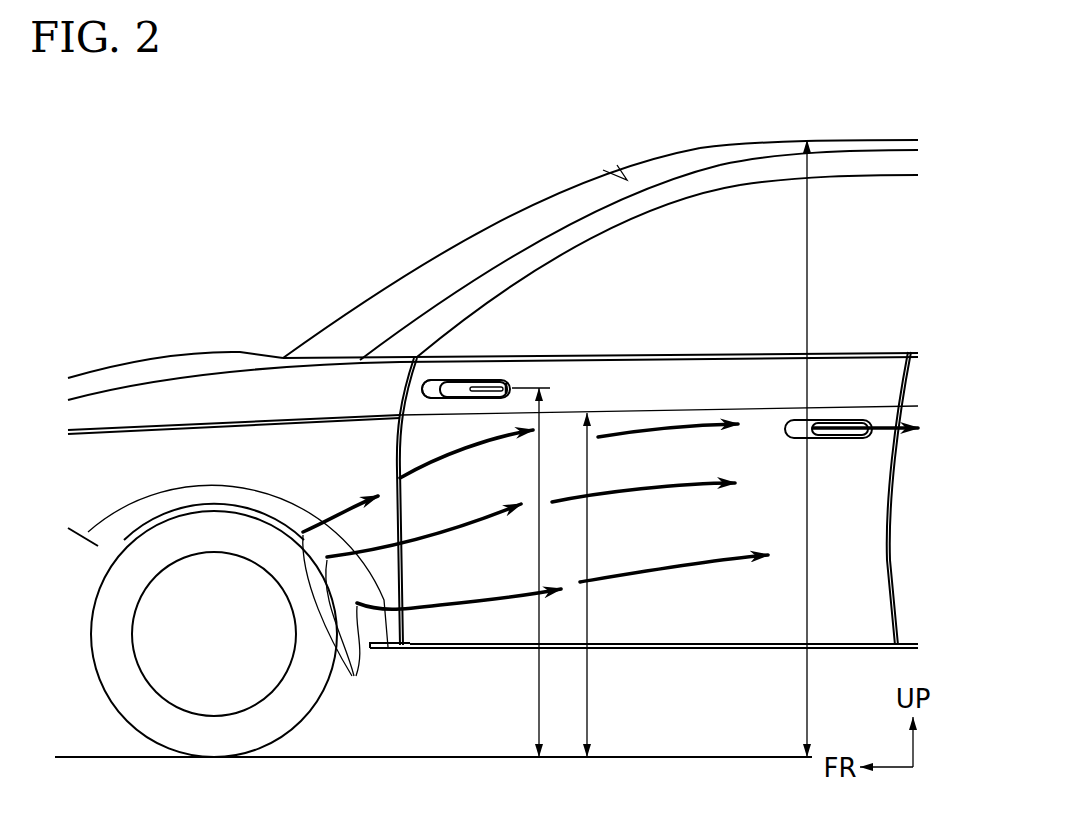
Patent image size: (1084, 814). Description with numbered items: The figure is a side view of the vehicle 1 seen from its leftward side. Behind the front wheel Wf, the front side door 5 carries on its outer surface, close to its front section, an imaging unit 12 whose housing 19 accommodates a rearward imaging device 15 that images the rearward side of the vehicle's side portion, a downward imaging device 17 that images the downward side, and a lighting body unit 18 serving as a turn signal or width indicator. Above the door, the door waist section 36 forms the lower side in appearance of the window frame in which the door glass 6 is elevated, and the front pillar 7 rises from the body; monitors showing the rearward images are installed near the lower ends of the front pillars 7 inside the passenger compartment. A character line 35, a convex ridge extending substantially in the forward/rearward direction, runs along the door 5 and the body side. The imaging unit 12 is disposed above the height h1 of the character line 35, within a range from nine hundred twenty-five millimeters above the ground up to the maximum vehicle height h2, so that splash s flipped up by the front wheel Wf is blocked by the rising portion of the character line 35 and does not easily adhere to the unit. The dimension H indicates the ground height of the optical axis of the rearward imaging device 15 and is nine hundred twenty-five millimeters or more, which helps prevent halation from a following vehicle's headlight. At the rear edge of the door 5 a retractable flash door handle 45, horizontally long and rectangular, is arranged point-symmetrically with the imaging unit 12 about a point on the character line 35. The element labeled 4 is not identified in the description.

The vehicle 1 is at (720, 121).
The front pillar 4 is at (368, 298).
The front side door 5 is at (775, 635).
The door glass 6 is at (598, 263).
The front pillar 7 is at (488, 270).
The imaging unit 12 is at (455, 376).
The rearward imaging device 15 is at (508, 386).
The downward imaging device 17 is at (472, 398).
The lighting body unit 18 is at (492, 387).
The housing 19 is at (430, 382).
The character line 35 is at (725, 408).
The door waist section 36 is at (651, 355).
The flash door handle 45 is at (852, 418).
The splash s is at (333, 620).
The front wheel Wf is at (218, 755).
The dimension H is at (539, 685).
The height h1 is at (588, 677).
The maximum vehicle height h2 is at (808, 670).